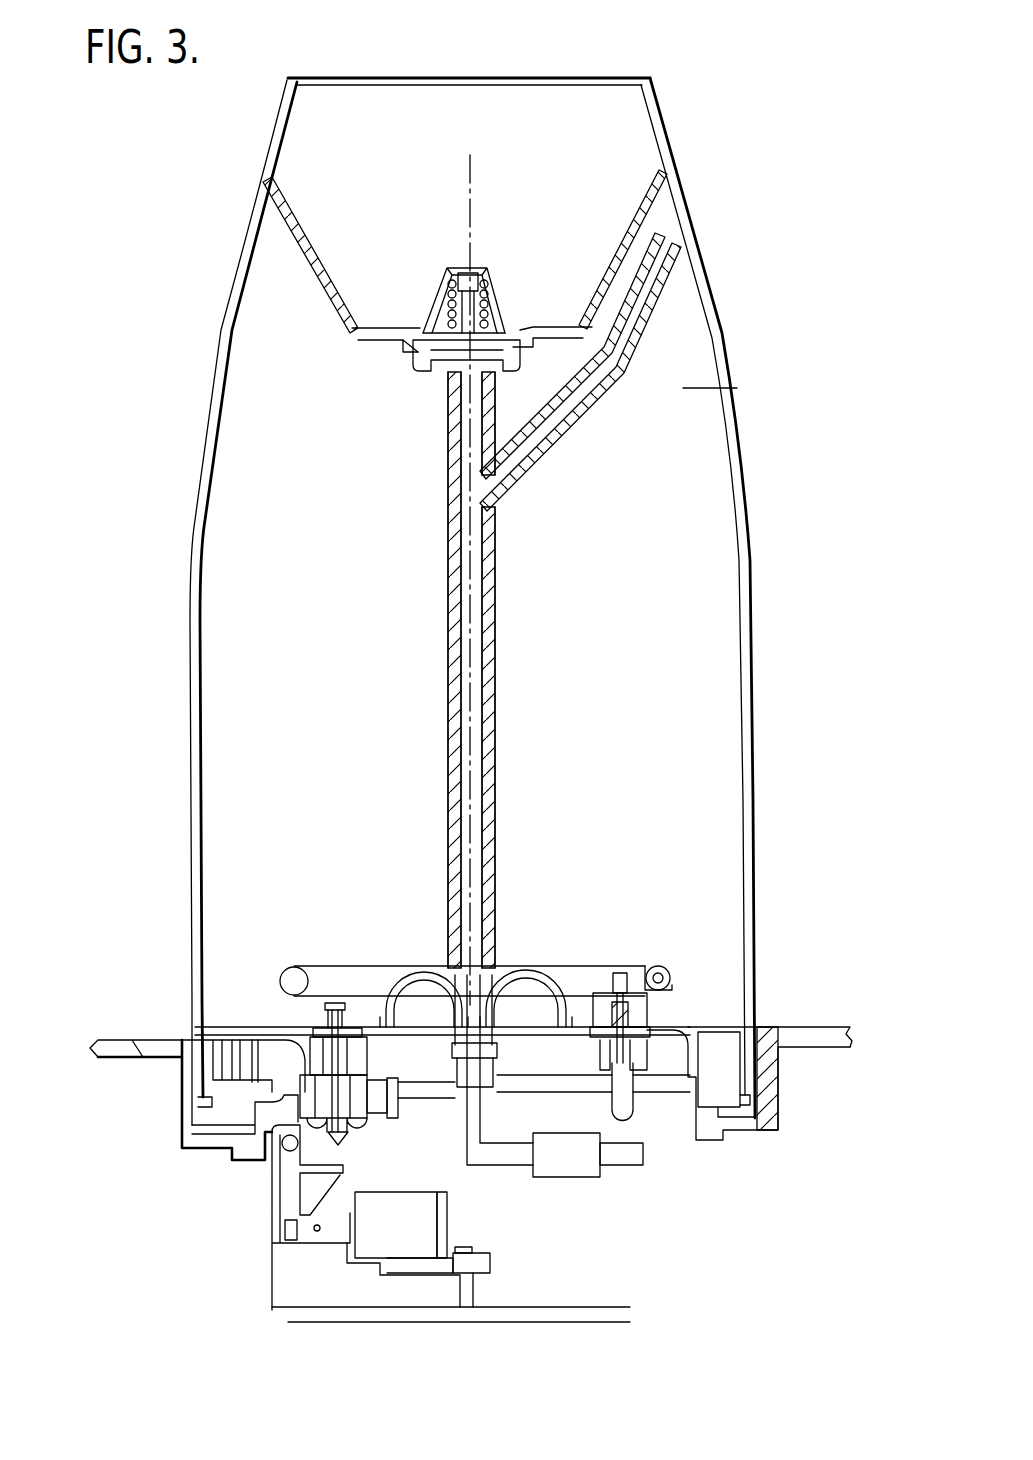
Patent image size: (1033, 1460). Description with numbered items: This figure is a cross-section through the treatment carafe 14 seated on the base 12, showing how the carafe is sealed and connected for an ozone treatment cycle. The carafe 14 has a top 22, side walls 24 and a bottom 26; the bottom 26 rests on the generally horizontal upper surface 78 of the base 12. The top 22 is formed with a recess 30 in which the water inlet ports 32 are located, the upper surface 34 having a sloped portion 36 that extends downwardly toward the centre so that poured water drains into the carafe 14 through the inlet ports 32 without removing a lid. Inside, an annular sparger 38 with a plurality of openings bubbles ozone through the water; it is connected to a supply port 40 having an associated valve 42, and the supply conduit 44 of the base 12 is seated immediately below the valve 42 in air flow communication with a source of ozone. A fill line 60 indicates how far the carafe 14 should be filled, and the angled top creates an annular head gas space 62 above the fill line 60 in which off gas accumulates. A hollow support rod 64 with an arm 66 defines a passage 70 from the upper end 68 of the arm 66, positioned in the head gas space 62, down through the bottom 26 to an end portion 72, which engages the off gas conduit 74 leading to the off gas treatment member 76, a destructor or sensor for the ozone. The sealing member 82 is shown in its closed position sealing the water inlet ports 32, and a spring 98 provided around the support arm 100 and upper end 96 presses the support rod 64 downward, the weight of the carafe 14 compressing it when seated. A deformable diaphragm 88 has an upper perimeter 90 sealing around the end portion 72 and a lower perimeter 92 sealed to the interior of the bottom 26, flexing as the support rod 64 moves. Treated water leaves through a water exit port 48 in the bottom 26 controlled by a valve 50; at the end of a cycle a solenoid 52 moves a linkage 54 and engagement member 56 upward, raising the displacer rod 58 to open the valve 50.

The base 12 is at (849, 1030).
The treatment carafe 14 is at (782, 631).
The top 22 is at (645, 75).
The side walls 24 is at (745, 434).
The bottom 26 is at (740, 1027).
The recess 30 is at (655, 150).
The water inlet ports 32 is at (424, 310).
The upper surface 34 is at (370, 327).
The sloped portion 36 is at (313, 266).
The annular sparger 38 is at (578, 966).
The supply port 40 is at (660, 1000).
The valve 42 is at (655, 1015).
The supply conduit 44 is at (634, 1110).
The water exit port 48 is at (285, 1050).
The valve 50 is at (325, 1018).
The solenoid 52 is at (447, 1223).
The linkage 54 is at (290, 1183).
The engagement member 56 is at (447, 1220).
The displacer rod 58 is at (348, 1134).
The fill line 60 is at (707, 388).
The head gas space 62 is at (702, 295).
The support rod 64 is at (495, 632).
The arm 66 is at (530, 465).
The upper end 68 is at (688, 262).
The passage 70 is at (482, 780).
The end portion 72 is at (505, 1000).
The off gas conduit 74 is at (482, 1128).
The off gas treatment member 76 is at (579, 1172).
The upper surface 78 is at (433, 1090).
The sealing member 82 is at (412, 377).
The diaphragm 88 is at (410, 985).
The upper perimeter 90 is at (453, 967).
The lower perimeter 92 is at (378, 1008).
The upper end 96 is at (492, 288).
The spring 98 is at (496, 278).
The support arm 100 is at (446, 272).